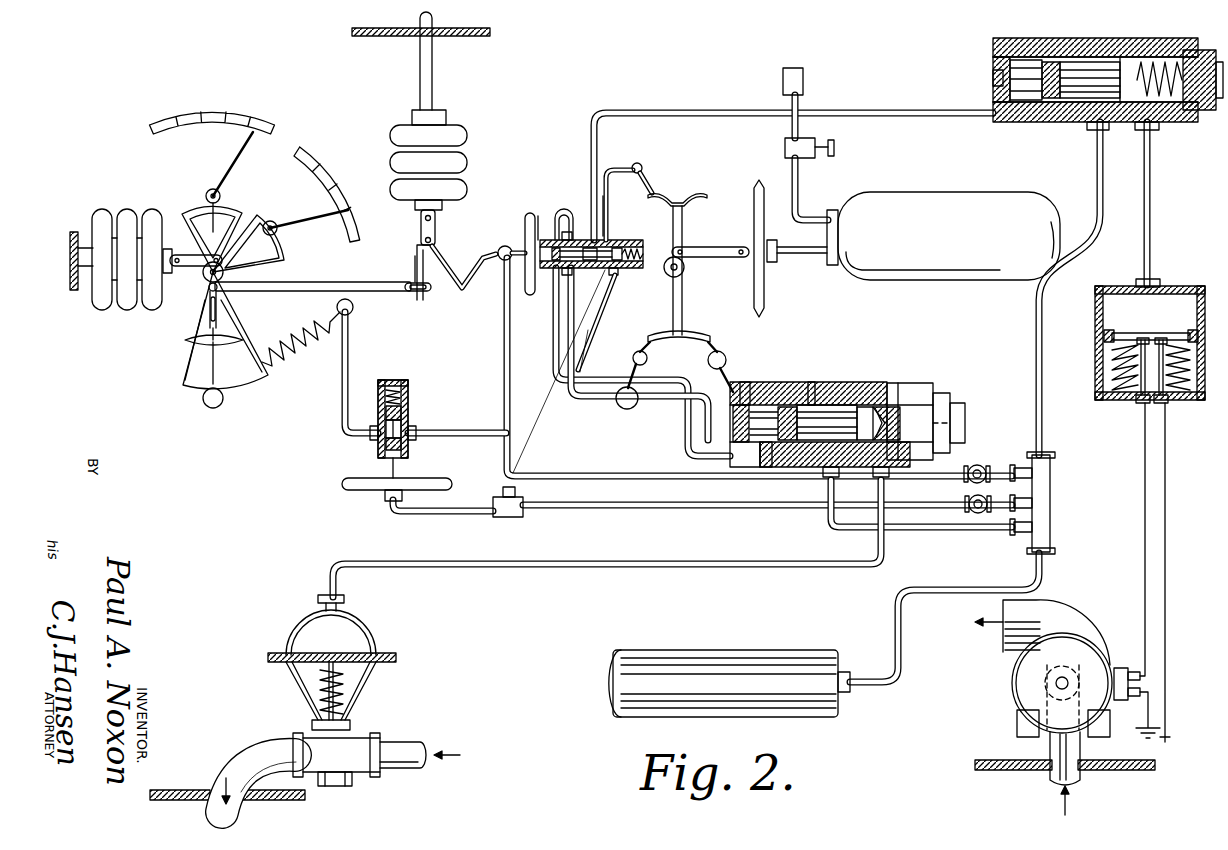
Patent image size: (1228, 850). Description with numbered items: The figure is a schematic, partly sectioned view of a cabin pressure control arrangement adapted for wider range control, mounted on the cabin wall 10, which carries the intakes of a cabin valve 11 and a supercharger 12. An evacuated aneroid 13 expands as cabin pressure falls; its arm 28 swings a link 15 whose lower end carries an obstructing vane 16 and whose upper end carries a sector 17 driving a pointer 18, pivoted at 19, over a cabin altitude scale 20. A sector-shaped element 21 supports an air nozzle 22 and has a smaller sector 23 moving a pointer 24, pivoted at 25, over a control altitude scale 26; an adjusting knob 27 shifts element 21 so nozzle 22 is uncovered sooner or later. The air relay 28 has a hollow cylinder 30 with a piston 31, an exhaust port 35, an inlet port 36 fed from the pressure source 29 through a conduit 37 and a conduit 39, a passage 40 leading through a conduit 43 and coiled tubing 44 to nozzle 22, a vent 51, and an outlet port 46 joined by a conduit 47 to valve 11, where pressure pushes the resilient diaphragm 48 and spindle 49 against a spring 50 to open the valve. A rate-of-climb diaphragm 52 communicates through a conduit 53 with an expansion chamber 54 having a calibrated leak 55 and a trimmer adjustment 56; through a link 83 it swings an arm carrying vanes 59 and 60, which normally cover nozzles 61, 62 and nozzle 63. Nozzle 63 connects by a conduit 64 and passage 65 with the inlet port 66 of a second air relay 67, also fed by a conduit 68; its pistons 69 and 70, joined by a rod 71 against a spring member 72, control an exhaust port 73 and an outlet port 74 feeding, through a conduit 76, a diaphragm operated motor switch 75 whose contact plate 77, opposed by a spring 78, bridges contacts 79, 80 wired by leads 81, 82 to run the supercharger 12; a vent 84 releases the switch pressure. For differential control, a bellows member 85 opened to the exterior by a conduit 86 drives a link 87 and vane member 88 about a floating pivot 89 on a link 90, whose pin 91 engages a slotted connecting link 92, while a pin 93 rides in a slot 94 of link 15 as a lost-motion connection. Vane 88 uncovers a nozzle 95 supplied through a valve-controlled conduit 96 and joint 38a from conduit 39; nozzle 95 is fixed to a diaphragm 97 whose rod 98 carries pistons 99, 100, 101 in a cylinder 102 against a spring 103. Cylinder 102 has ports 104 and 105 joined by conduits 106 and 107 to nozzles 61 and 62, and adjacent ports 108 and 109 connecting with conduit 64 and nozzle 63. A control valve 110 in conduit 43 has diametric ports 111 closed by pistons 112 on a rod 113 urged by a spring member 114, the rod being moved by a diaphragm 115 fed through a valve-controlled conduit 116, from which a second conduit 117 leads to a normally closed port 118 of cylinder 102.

The wall 10 is at (70, 288).
The cabin valve 11 is at (352, 782).
The supercharger 12 is at (1012, 685).
The aneroid 13 is at (128, 212).
The link 15 is at (220, 313).
The obstructing vane 16 is at (190, 353).
The sector 17 is at (235, 218).
The pointer 18 is at (246, 153).
The pivot 19 is at (208, 193).
The scale 20 is at (186, 128).
The sector-shaped element 21 is at (198, 378).
The air nozzle 22 is at (242, 381).
The sector 23 is at (270, 250).
The pointer 24 is at (322, 218).
The pivot 25 is at (272, 221).
The scale 26 is at (347, 223).
The adjusting knob 27 is at (213, 408).
The air relay 28 is at (183, 254).
The pressure source 29 is at (727, 656).
The hollow cylinder 30 is at (780, 382).
The piston 31 is at (765, 423).
The exhaust port 35 is at (814, 382).
The inlet port 36 is at (826, 478).
The conduit 37 is at (943, 532).
The joint 38a is at (1049, 497).
The conduit 39 is at (904, 590).
The passage 40 is at (796, 464).
The conduit 43 is at (348, 360).
The coiled tubing 44 is at (292, 361).
The outlet port 46 is at (893, 437).
The conduit 47 is at (572, 568).
The resilient diaphragm 48 is at (350, 655).
The spindle 49 is at (344, 689).
The spring 50 is at (328, 690).
The vent 51 is at (950, 418).
The diaphragm 52 is at (766, 290).
The conduit 53 is at (800, 254).
The expansion chamber 54 is at (943, 236).
The calibrated leak 55 is at (803, 79).
The trimmer adjustment 56 is at (815, 156).
The obstructing vane 59 is at (690, 335).
The obstructing vane 60 is at (690, 195).
The nozzle 61 is at (636, 352).
The nozzle 62 is at (722, 356).
The nozzle 63 is at (646, 172).
The conduit 64 is at (612, 116).
The passage 65 is at (1058, 122).
The inlet port 66 is at (1093, 128).
The second air relay 67 is at (1128, 43).
The conduit 68 is at (1096, 202).
The piston 69 is at (1026, 80).
The piston 70 is at (1104, 38).
The rod 71 is at (1050, 60).
The spring member 72 is at (1165, 60).
The exhaust port 73 is at (1085, 60).
The outlet port 74 is at (1160, 128).
The diaphragm operated motor switch 75 is at (1182, 283).
The conduit 76 is at (1152, 192).
The contact plate 77 is at (1158, 333).
The spring 78 is at (1112, 363).
The contact 79 is at (1142, 338).
The contact 80 is at (1165, 338).
The lead 81 is at (1143, 546).
The lead 82 is at (1166, 535).
The link 83 is at (712, 247).
The vent 84 is at (1200, 48).
The bellows member 85 is at (462, 136).
The conduit 86 is at (433, 75).
The link 87 is at (437, 227).
The vane member 88 is at (466, 282).
The floating pivot 89 is at (417, 248).
The link 90 is at (415, 266).
The pin 91 is at (420, 292).
The connecting link 92 is at (337, 282).
The pin 93 is at (207, 289).
The slot 94 is at (200, 341).
The nozzle 95 is at (503, 245).
The valve-controlled conduit 96 is at (504, 378).
The diaphragm 97 is at (535, 213).
The rod 98 is at (528, 300).
The piston 99 is at (563, 212).
The piston 100 is at (578, 270).
The piston 101 is at (625, 270).
The cylinder 102 is at (603, 240).
The spring 103 is at (640, 250).
The port 104 is at (588, 238).
The port 105 is at (571, 280).
The conduit 106 is at (552, 338).
The conduit 107 is at (592, 334).
The port 108 is at (609, 190).
The port 109 is at (608, 212).
The control valve 110 is at (405, 390).
The diametric ports 111 is at (370, 436).
The pistons 112 is at (385, 413).
The rod 113 is at (410, 442).
The spring member 114 is at (392, 380).
The diaphragm 115 is at (366, 491).
The valve-controlled conduit 116 is at (433, 515).
The second conduit 117 is at (556, 430).
The normally closed port 118 is at (622, 285).